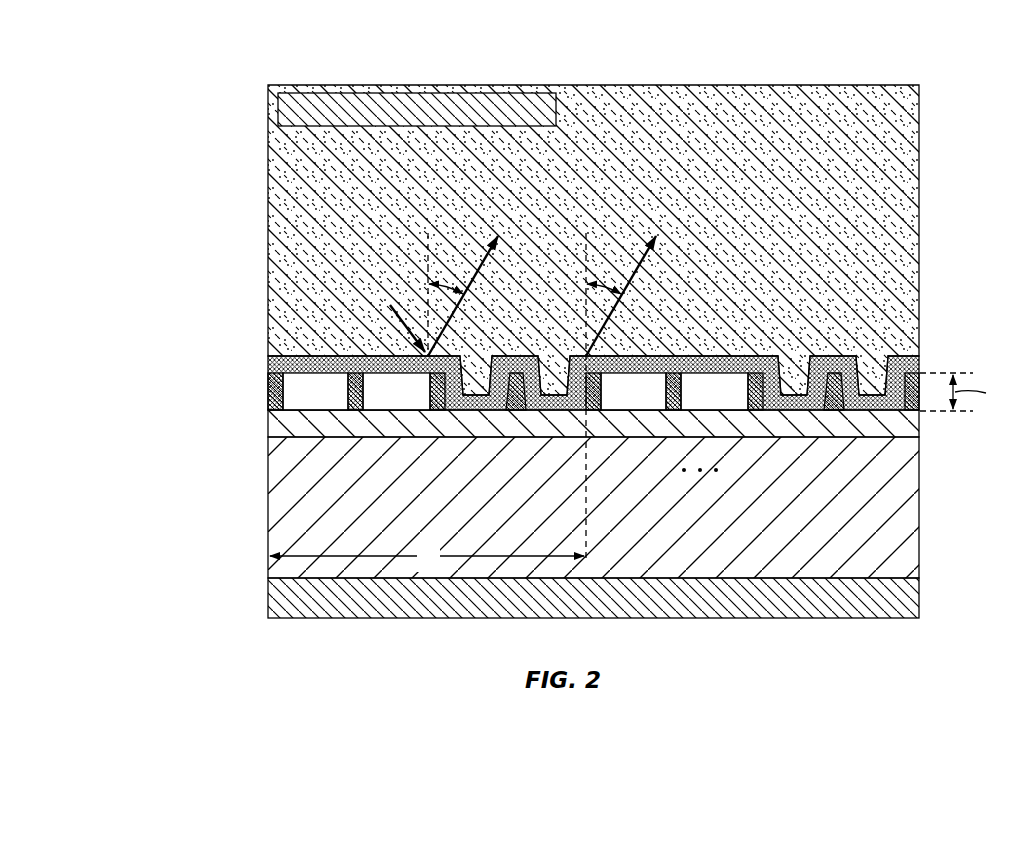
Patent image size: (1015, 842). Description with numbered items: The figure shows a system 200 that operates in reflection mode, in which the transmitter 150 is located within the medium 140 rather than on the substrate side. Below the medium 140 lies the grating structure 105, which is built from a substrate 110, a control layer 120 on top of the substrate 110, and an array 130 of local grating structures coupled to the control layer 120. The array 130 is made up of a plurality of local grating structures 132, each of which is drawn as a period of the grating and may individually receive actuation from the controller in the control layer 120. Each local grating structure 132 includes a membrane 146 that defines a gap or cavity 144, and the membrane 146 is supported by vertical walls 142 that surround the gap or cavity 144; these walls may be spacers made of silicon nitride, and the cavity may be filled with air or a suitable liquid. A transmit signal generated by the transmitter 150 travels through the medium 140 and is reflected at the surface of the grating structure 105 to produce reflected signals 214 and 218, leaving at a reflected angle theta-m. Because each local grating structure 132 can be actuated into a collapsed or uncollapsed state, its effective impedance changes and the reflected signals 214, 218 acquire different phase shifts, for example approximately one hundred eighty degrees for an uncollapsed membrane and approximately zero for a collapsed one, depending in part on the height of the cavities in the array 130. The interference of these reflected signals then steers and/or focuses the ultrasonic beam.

The system 200 is at (536, 320).
The transmitter 150 is at (286, 113).
The medium 140 is at (268, 223).
The membrane 146 is at (268, 365).
The gap or cavity 144 is at (296, 398).
The vertical walls 142 is at (565, 393).
The array of local grating structures 130 is at (519, 380).
The grating structure 105 is at (495, 456).
The control layer 120 is at (268, 424).
The substrate 110 is at (565, 507).
The local grating structure 132 is at (910, 437).
The reflected signal 214 is at (479, 217).
The reflected signal 218 is at (639, 217).